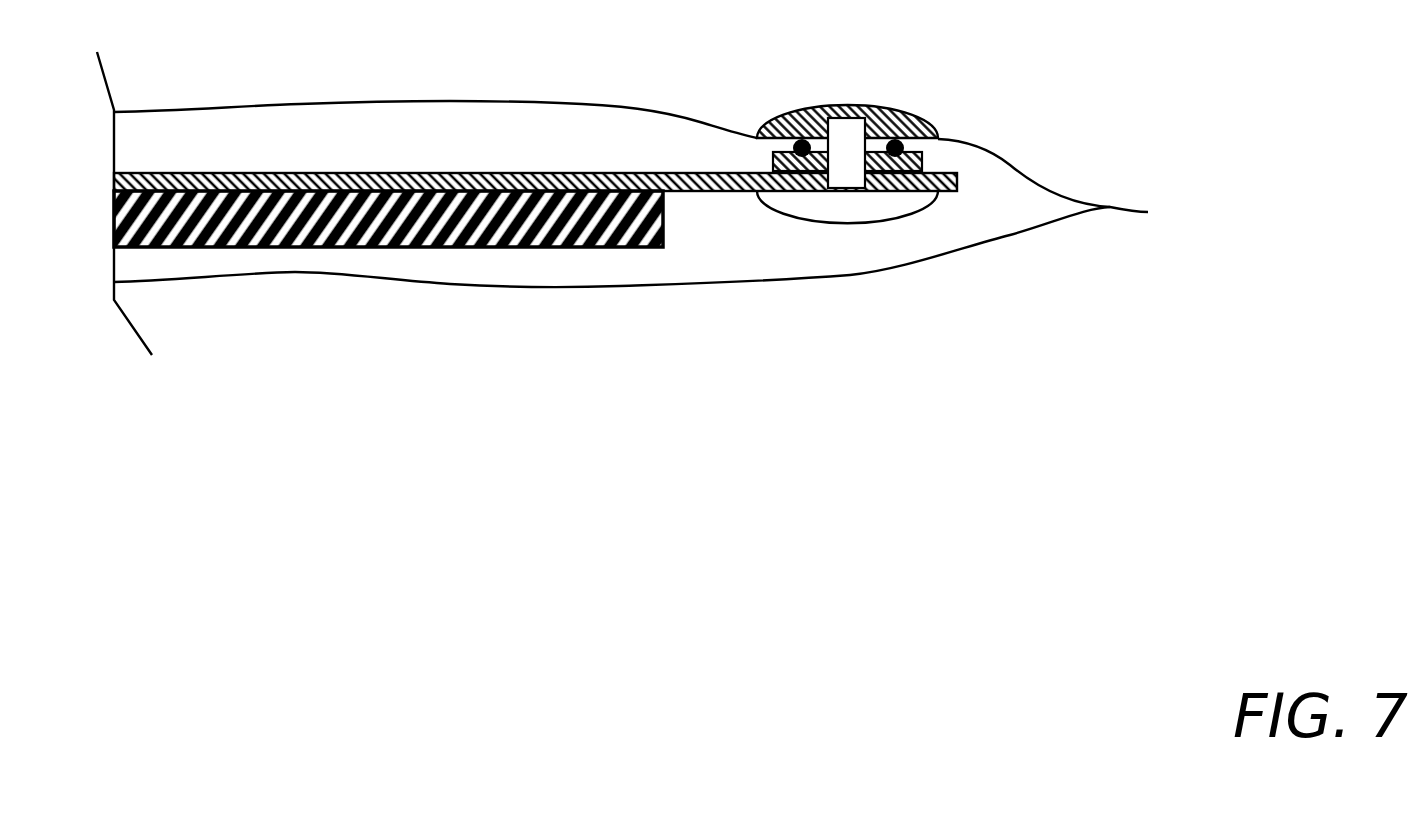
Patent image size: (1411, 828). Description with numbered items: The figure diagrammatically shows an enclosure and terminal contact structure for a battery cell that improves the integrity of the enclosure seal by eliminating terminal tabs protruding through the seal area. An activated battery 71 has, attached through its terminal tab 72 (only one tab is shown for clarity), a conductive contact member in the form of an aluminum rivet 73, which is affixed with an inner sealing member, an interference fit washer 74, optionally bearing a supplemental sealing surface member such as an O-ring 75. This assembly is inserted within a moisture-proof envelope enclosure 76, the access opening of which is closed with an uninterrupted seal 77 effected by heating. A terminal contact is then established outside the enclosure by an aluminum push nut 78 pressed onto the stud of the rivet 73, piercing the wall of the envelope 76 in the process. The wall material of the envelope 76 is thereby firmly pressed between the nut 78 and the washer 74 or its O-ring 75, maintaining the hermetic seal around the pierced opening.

The activated battery 71 is at (388, 247).
The terminal tab 72 is at (720, 191).
The aluminum rivet 73 is at (837, 213).
The interference fit washer 74 is at (920, 160).
The O-ring 75 is at (798, 148).
The moisture-proof envelope enclosure 76 is at (529, 287).
The uninterrupted seal 77 is at (1111, 210).
The aluminum push nut 78 is at (848, 105).